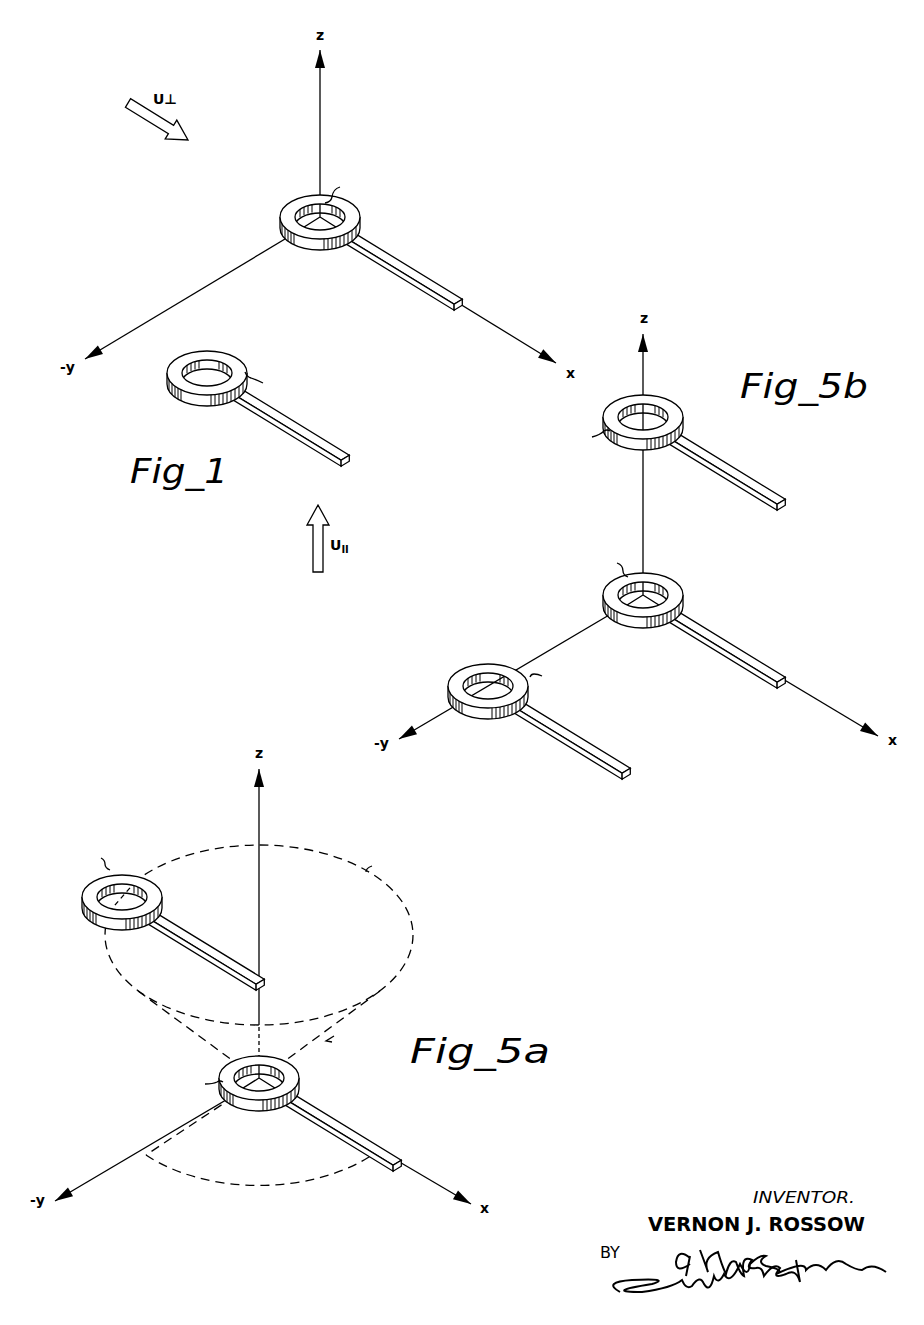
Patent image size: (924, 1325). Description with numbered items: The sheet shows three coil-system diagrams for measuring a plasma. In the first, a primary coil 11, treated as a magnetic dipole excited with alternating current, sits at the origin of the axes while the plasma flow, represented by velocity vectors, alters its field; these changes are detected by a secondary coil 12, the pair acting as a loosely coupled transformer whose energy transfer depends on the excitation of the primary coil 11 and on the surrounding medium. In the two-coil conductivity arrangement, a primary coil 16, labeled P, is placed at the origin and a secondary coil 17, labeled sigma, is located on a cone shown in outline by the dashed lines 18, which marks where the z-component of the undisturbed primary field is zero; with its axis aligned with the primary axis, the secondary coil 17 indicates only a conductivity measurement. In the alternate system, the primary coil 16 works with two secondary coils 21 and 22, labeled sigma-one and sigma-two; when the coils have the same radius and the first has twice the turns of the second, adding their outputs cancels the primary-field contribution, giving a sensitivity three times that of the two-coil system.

In FIG. 1, the primary coil 11 is at (331, 249).
In FIG. 1, the secondary coil 12 is at (244, 372).
In FIG. 5A, the primary coil 16 is at (294, 1086).
In FIG. 5B, the primary coil 16 is at (677, 602).
In FIG. 5A, the secondary coil 17 is at (86, 906).
In FIG. 5A, the dashed lines 18 is at (204, 1042).
In FIG. 5B, the secondary coil 21 is at (454, 688).
In FIG. 5B, the secondary coil 22 is at (666, 406).